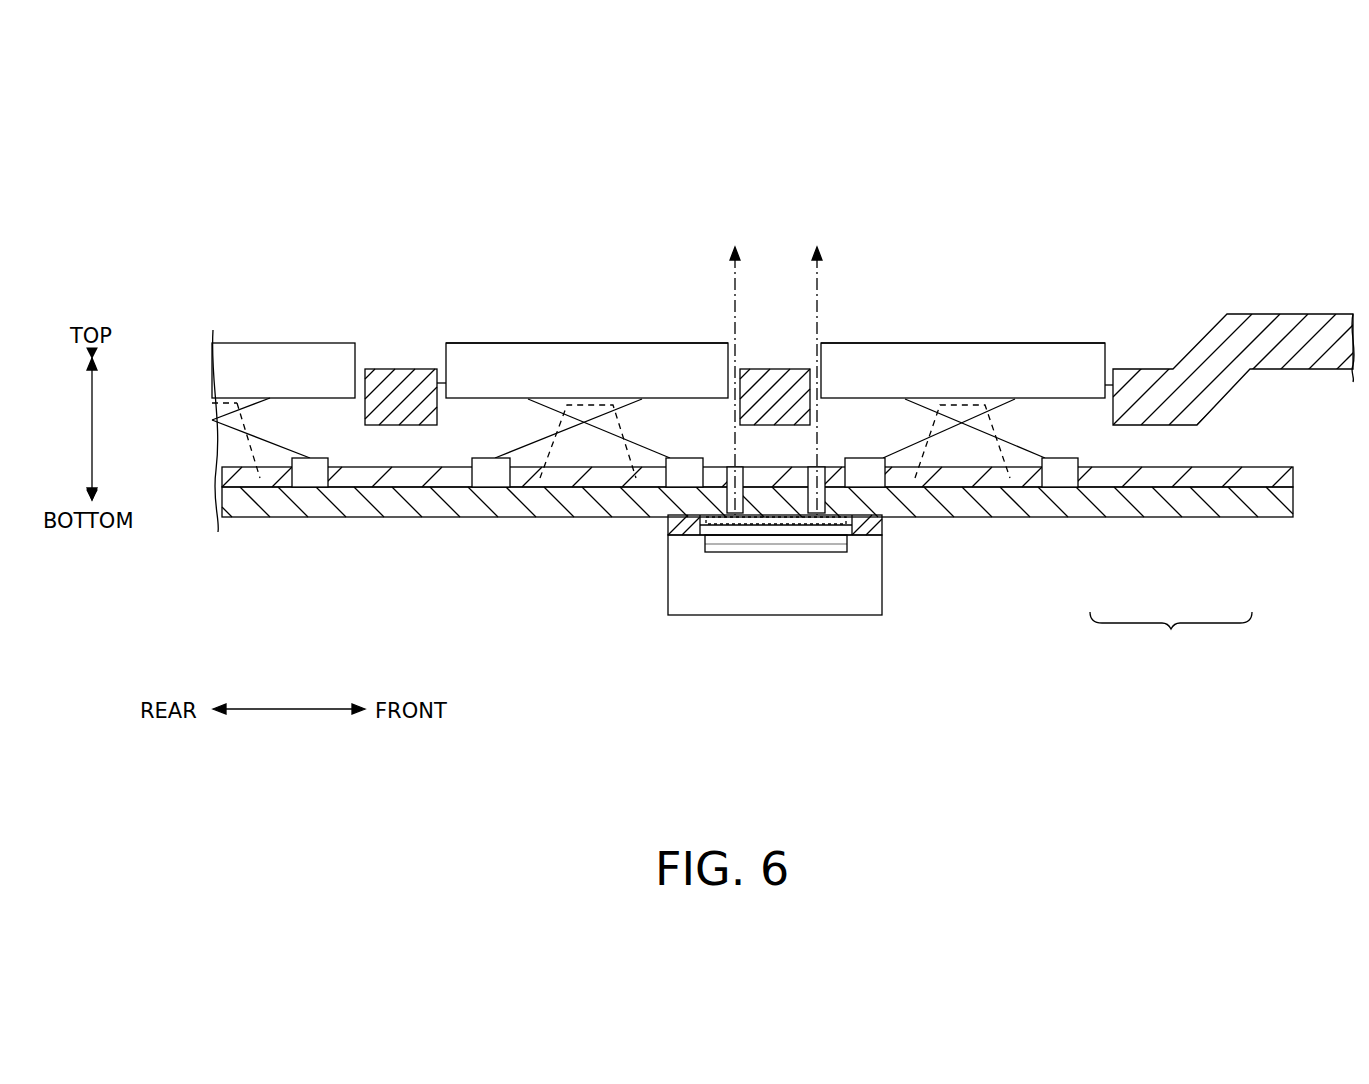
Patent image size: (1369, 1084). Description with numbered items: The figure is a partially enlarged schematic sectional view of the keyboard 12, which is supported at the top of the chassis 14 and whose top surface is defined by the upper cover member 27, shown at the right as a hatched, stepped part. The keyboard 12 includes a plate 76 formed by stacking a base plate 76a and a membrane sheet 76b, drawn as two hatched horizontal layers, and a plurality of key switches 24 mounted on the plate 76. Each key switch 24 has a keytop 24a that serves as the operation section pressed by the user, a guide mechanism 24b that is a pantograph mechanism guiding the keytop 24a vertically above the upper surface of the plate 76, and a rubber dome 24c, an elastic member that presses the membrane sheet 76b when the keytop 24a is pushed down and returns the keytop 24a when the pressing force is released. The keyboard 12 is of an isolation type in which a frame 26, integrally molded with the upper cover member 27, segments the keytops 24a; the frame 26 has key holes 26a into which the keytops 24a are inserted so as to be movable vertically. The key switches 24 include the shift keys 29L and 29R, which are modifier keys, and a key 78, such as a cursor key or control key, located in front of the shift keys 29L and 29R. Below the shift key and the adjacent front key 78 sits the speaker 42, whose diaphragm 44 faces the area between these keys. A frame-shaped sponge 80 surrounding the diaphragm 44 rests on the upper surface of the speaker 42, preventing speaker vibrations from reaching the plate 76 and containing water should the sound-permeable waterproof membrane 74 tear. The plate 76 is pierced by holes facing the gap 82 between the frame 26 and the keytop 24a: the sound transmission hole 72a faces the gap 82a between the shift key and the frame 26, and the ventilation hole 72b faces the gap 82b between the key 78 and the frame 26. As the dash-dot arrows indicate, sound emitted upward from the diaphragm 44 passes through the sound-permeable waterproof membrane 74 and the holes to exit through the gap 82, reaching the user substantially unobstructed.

The keyboard 12 is at (601, 183).
The chassis 14 is at (1188, 198).
The key switch 24 is at (312, 302).
The keytop 24a is at (587, 352).
The guide mechanism 24b is at (532, 440).
The rubber dome 24c is at (613, 447).
The frame 26 is at (413, 378).
The key hole 26a is at (446, 383).
The upper cover member 27 is at (1275, 325).
The shift key 29L is at (643, 220).
The shift key 29R is at (755, 166).
The speaker 42 is at (680, 660).
The diaphragm 44 is at (823, 550).
The sound transmission hole 72a is at (733, 468).
The ventilation hole 72b is at (820, 468).
The sound-permeable waterproof membrane 74 is at (783, 544).
The plate 76 is at (1171, 644).
The base plate 76a is at (1116, 500).
The membrane sheet 76b is at (1210, 477).
The key 78 is at (980, 222).
The sponge 80 is at (665, 527).
The gap 82 is at (760, 522).
The gap 82a is at (790, 713).
The gap 82b is at (891, 208).